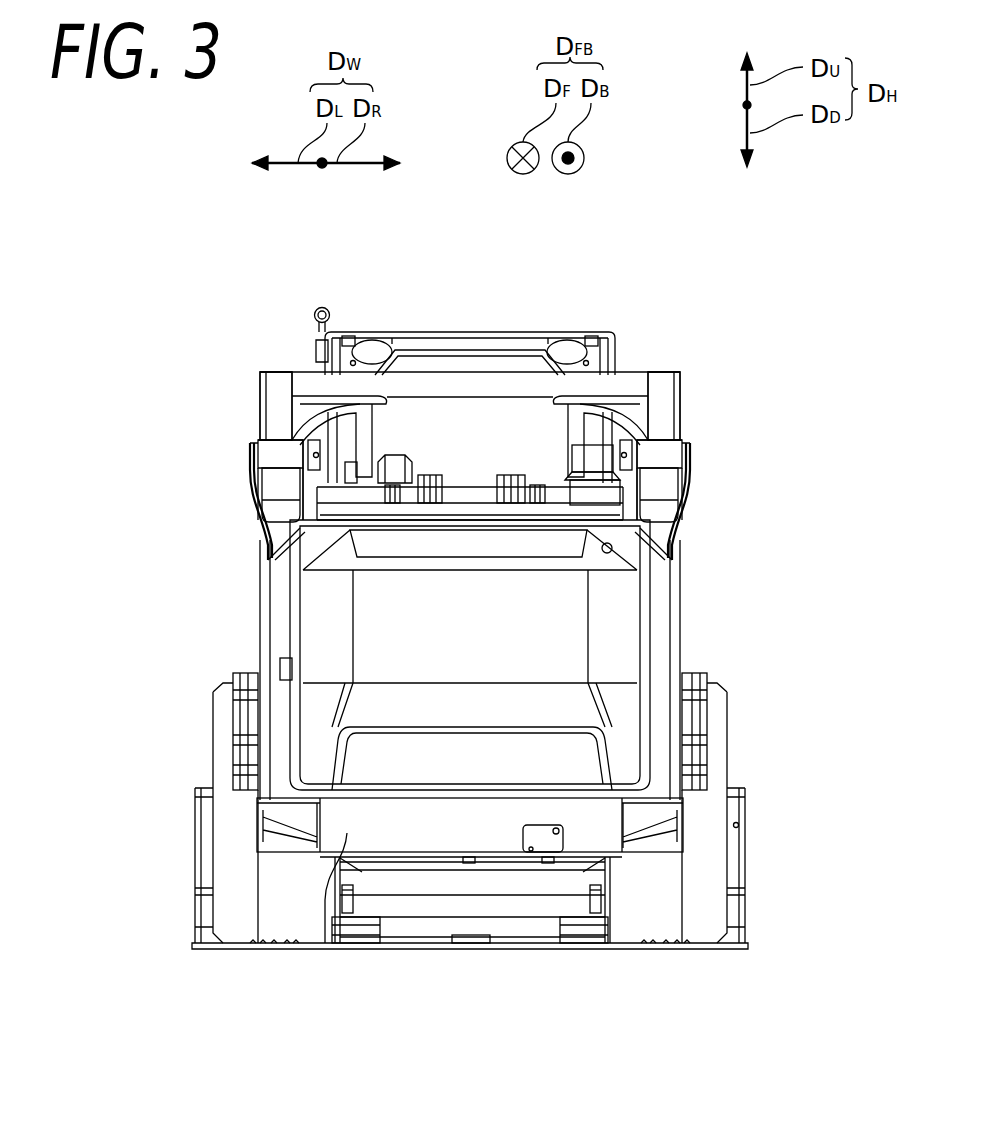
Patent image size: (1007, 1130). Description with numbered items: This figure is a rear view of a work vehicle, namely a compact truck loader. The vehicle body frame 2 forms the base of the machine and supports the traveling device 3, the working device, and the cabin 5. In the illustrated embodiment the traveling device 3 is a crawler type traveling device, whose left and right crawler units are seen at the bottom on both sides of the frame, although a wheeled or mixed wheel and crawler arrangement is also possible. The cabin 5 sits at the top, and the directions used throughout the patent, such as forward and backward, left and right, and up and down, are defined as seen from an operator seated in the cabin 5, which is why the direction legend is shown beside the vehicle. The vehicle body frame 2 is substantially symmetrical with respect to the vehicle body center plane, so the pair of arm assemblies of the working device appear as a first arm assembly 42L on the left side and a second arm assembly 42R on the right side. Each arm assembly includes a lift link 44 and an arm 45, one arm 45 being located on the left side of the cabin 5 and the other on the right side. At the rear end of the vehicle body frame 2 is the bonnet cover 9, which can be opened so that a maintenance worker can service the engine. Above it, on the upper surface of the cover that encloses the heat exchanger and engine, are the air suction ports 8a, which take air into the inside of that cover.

The vehicle body frame 2 is at (323, 949).
The traveling device 3 is at (233, 949).
The cabin 5 is at (617, 353).
The air suction port 8a is at (432, 478).
The bonnet cover 9 is at (617, 608).
The first arm assembly 42L is at (112, 425).
The second arm assembly 42R is at (833, 408).
The lift link 44 is at (273, 483).
The arm 45 is at (273, 413).